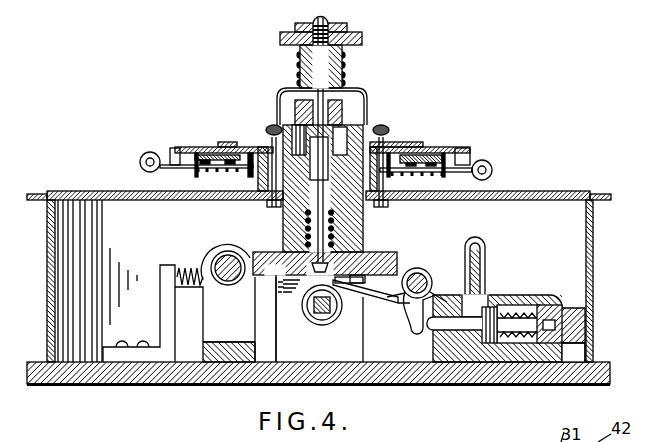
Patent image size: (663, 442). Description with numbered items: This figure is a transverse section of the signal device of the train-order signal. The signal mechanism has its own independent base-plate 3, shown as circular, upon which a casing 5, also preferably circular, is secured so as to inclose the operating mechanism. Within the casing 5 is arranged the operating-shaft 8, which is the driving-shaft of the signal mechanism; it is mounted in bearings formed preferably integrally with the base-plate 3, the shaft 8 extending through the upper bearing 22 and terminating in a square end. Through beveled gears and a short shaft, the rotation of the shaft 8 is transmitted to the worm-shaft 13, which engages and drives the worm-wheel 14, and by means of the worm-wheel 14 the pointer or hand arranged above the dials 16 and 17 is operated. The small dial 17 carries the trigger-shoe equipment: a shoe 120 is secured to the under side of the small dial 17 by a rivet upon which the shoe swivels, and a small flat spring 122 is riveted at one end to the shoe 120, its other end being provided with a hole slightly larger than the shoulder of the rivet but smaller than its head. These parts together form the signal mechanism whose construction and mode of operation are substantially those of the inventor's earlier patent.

The base-plate 3 is at (463, 386).
The casing 5 is at (594, 283).
The operating-shaft 8 is at (322, 318).
The worm-shaft 13 is at (223, 259).
The worm-wheel 14 is at (393, 266).
The dial 16 is at (523, 192).
The small dial 17 is at (459, 148).
The upper bearing 22 is at (349, 328).
The shoe 120 is at (200, 157).
The flat spring 122 is at (227, 148).